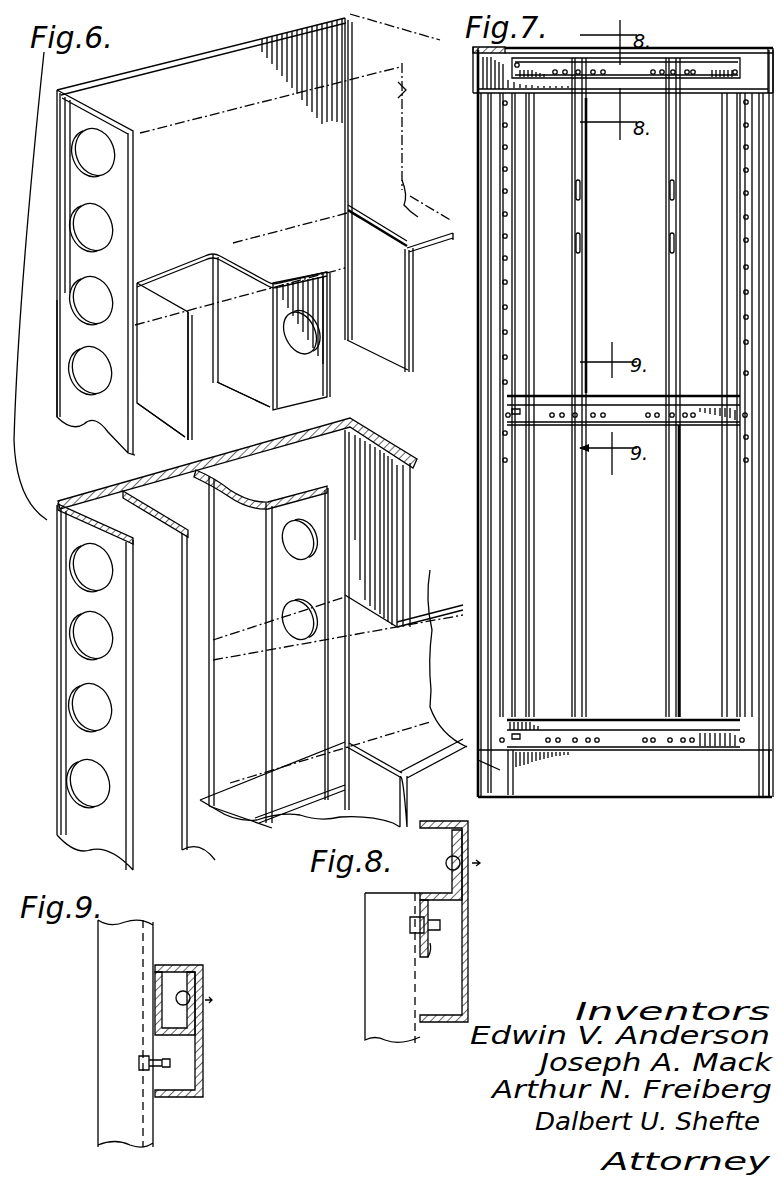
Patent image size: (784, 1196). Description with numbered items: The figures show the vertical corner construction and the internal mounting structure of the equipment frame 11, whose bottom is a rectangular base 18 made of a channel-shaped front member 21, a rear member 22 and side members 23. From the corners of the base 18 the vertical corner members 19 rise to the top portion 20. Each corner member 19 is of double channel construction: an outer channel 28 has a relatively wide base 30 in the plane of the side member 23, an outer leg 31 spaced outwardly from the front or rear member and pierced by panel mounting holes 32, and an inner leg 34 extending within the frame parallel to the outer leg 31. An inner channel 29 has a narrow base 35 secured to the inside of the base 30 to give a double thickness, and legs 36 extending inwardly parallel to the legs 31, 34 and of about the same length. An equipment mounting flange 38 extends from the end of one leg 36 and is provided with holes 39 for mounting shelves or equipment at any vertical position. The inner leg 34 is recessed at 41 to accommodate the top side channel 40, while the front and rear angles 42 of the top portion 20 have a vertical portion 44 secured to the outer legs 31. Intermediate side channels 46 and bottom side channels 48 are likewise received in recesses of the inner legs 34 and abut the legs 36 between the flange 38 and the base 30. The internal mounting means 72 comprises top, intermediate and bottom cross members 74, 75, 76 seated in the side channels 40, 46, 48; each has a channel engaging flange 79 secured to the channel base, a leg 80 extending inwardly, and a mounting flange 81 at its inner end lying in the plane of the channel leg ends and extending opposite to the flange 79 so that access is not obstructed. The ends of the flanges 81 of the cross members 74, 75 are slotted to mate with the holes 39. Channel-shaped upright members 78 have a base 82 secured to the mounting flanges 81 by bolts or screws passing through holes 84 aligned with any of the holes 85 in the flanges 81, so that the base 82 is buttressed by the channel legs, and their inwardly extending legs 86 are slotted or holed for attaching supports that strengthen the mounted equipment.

In FIG. 7, the frame 11 is at (632, 804).
In FIG. 7, the base 18 is at (700, 800).
In FIG. 6, the vertical corner member 19 is at (176, 54).
In FIG. 7, the vertical corner member 19 is at (535, 152).
In FIG. 6, the top portion 20 is at (413, 206).
In FIG. 7, the top portion 20 is at (700, 60).
In FIG. 7, the front member 21 is at (478, 768).
In FIG. 7, the rear member 22 is at (768, 800).
In FIG. 7, the side member 23 is at (632, 788).
In FIG. 6, the outer channel 28 is at (95, 52).
In FIG. 7, the outer channel 28 is at (487, 124).
In FIG. 6, the inner channel 29 is at (215, 378).
In FIG. 7, the inner channel 29 is at (493, 152).
In FIG. 6, the base of outer channel 30 is at (222, 50).
In FIG. 7, the base of outer channel 30 is at (522, 208).
In FIG. 6, the outer leg 31 is at (122, 193).
In FIG. 7, the outer leg 31 is at (480, 215).
In FIG. 6, the hole 32 is at (108, 231).
In FIG. 6, the inner leg 34 is at (413, 290).
In FIG. 7, the inner leg 34 is at (528, 222).
In FIG. 6, the narrow base 35 is at (203, 258).
In FIG. 7, the narrow base 35 is at (498, 282).
In FIG. 6, the legs of inner channel 36 is at (173, 402).
In FIG. 7, the legs of inner channel 36 is at (483, 276).
In FIG. 6, the equipment mounting flange 38 is at (312, 370).
In FIG. 7, the equipment mounting flange 38 is at (508, 318).
In FIG. 6, the holes 39 is at (307, 328).
In FIG. 7, the holes 39 is at (508, 292).
In FIG. 6, the top side channel 40 is at (387, 157).
In FIG. 7, the top side channel 40 is at (750, 60).
In FIG. 8, the top side channel 40 is at (475, 935).
In FIG. 6, the recess 41 is at (355, 213).
In FIG. 7, the front and rear angle 42 is at (476, 64).
In FIG. 7, the vertical portion 44 is at (478, 96).
In FIG. 6, the intermediate side channel 46 is at (431, 578).
In FIG. 7, the intermediate side channel 46 is at (620, 402).
In FIG. 9, the intermediate side channel 46 is at (205, 1050).
In FIG. 7, the bottom side channel 48 is at (604, 726).
In FIG. 7, the internal mounting means 72 is at (592, 637).
In FIG. 8, the internal mounting means 72 is at (362, 933).
In FIG. 9, the internal mounting means 72 is at (95, 977).
In FIG. 7, the top cross member 74 is at (640, 60).
In FIG. 8, the top cross member 74 is at (472, 892).
In FIG. 7, the intermediate cross member 75 is at (692, 405).
In FIG. 9, the intermediate cross member 75 is at (203, 1022).
In FIG. 7, the bottom cross member 76 is at (533, 728).
In FIG. 7, the upright member 78 is at (588, 528).
In FIG. 8, the upright member 78 is at (420, 1025).
In FIG. 9, the upright member 78 is at (155, 960).
In FIG. 7, the channel engaging flange 79 is at (675, 60).
In FIG. 8, the channel engaging flange 79 is at (470, 842).
In FIG. 9, the channel engaging flange 79 is at (203, 975).
In FIG. 8, the leg 80 is at (447, 872).
In FIG. 9, the leg 80 is at (180, 1000).
In FIG. 7, the mounting flange 81 is at (715, 80).
In FIG. 8, the mounting flange 81 is at (427, 953).
In FIG. 9, the mounting flange 81 is at (152, 1052).
In FIG. 7, the base of upright member 82 is at (588, 558).
In FIG. 8, the base of upright member 82 is at (414, 1035).
In FIG. 9, the base of upright member 82 is at (153, 932).
In FIG. 7, the holes in base 84 is at (582, 420).
In FIG. 7, the holes in mounting flange 85 is at (548, 425).
In FIG. 7, the legs of upright member 86 is at (660, 475).
In FIG. 8, the legs of upright member 86 is at (378, 968).
In FIG. 9, the legs of upright member 86 is at (108, 1048).